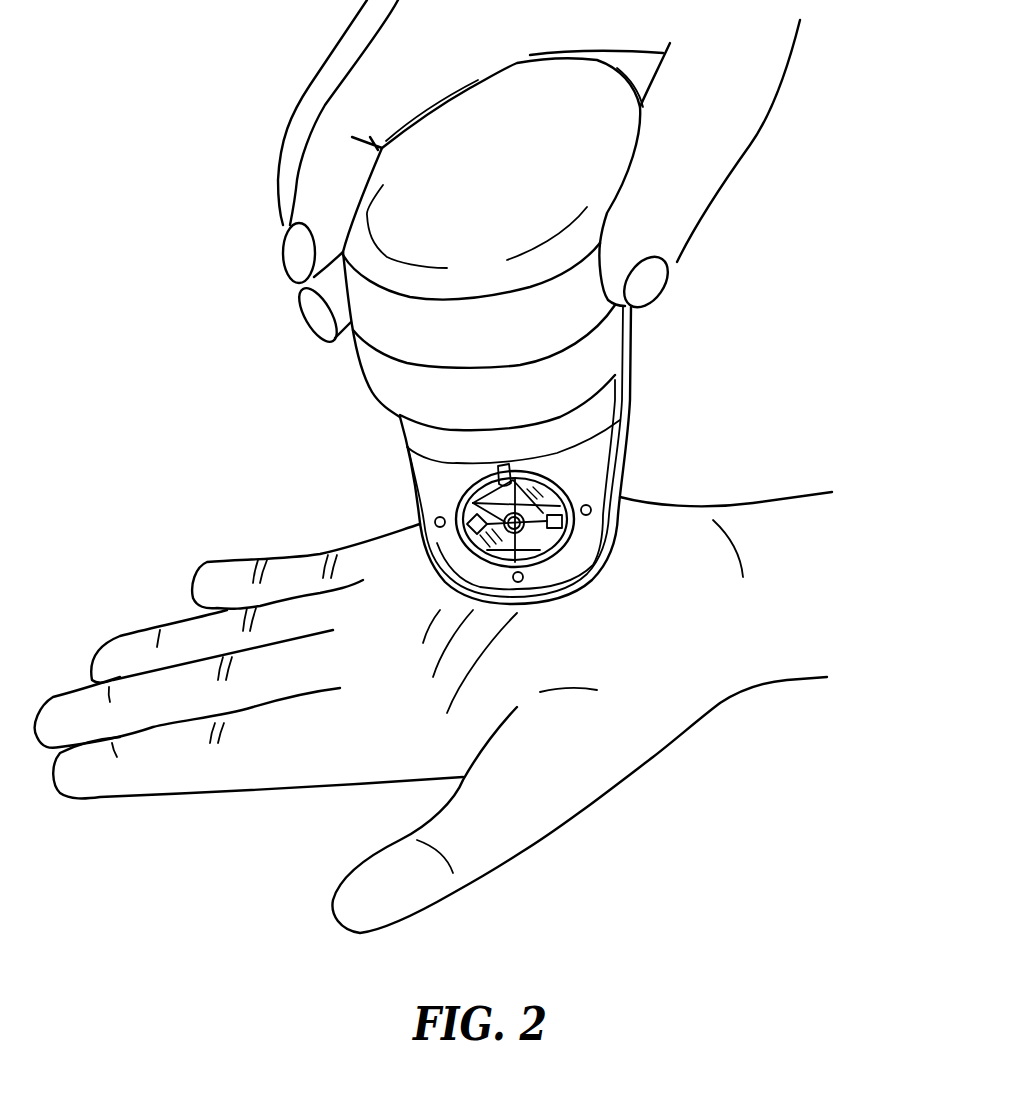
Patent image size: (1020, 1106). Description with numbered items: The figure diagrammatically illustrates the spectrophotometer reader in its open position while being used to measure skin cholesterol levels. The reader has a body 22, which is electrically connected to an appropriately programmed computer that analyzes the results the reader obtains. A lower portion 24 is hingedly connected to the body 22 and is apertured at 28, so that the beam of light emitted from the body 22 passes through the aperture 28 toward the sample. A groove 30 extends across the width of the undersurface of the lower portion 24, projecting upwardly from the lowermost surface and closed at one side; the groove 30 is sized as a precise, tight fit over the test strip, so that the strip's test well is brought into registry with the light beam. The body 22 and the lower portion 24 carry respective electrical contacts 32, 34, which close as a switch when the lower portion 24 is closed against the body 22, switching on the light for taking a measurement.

The body 22 is at (397, 382).
The lower portion 24 is at (437, 479).
The aperture 28 is at (483, 505).
The groove 30 is at (560, 497).
The electrical contact 32 is at (555, 540).
The electrical contact 34 is at (537, 471).